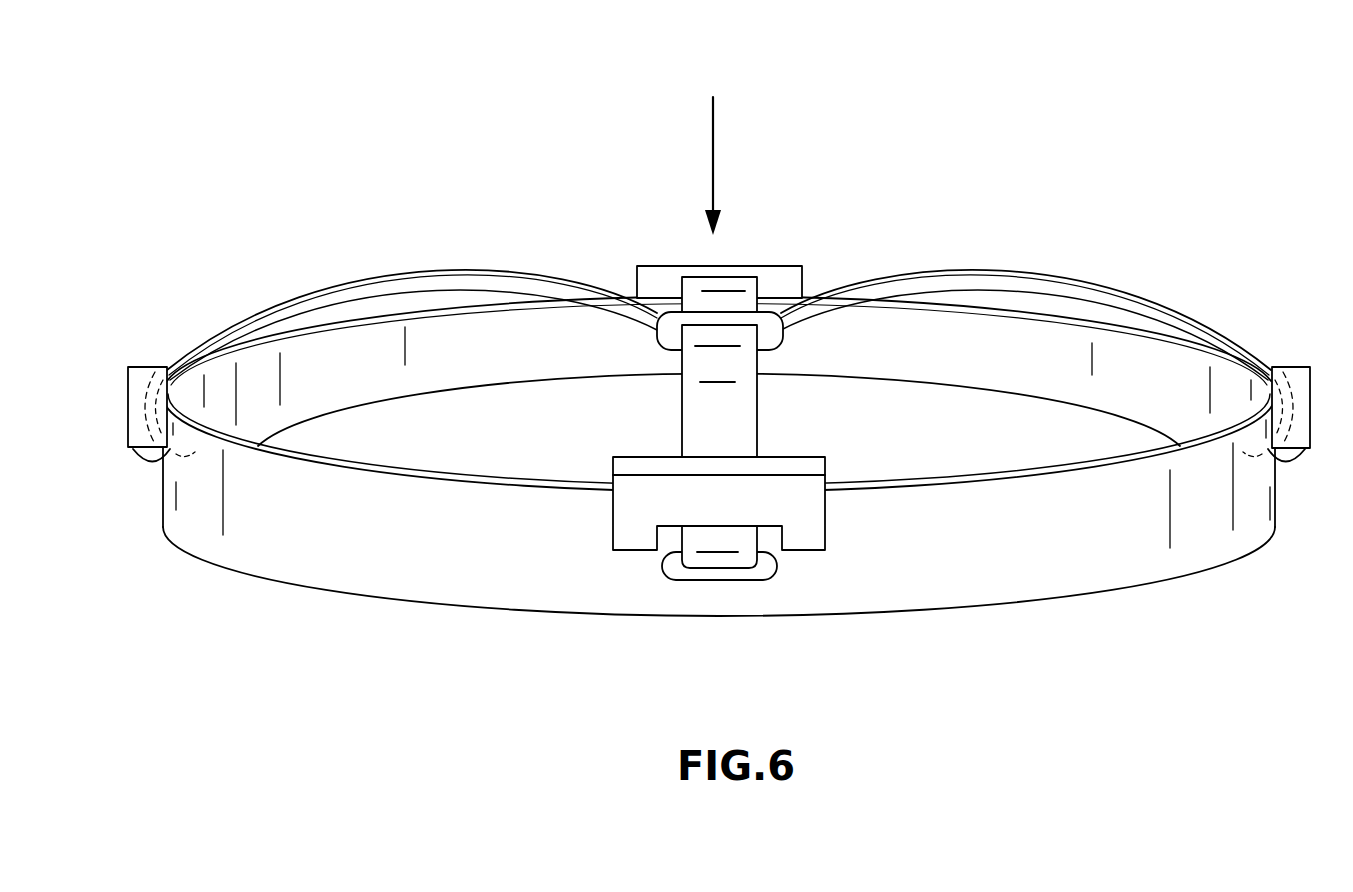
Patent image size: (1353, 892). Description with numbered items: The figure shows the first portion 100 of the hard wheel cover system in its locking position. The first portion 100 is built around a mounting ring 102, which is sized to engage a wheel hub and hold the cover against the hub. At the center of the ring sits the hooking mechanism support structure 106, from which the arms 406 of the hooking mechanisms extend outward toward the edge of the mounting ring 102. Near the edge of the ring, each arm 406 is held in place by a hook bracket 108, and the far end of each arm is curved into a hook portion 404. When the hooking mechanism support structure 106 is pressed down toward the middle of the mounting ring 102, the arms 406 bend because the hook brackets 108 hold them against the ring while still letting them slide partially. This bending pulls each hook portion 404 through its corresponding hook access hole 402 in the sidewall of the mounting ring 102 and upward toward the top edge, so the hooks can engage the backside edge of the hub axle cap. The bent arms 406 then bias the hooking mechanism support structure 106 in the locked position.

The first portion 100 is at (394, 150).
The mounting ring 102 is at (1080, 578).
The hooking mechanism support structure 106 is at (766, 322).
The hook bracket 108 is at (142, 372).
The hook access hole 402 is at (719, 582).
The hook portion 404 is at (163, 462).
The arm 406 is at (292, 330).